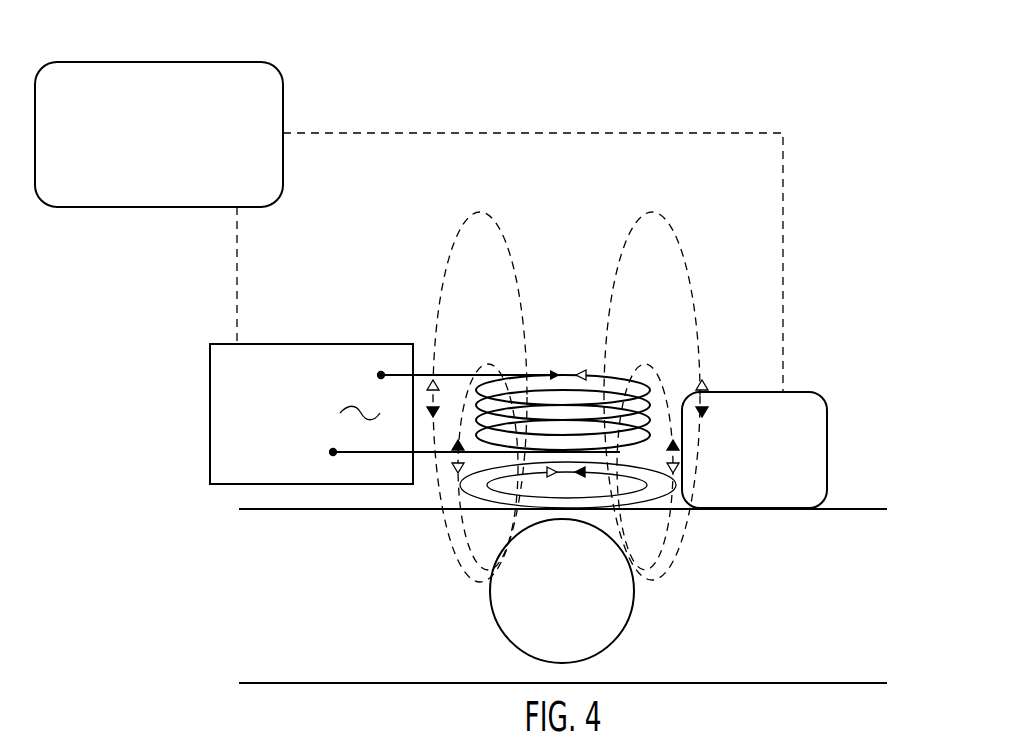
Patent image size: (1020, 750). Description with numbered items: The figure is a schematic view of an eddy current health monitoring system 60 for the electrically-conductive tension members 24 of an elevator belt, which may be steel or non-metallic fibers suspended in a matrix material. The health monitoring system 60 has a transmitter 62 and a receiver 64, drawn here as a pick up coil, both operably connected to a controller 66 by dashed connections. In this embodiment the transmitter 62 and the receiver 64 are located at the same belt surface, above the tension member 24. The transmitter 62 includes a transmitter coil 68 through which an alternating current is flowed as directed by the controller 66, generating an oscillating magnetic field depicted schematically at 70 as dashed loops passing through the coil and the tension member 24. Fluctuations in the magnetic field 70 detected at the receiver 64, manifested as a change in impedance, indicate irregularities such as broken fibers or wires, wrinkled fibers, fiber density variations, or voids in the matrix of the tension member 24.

The tension member 24 is at (562, 591).
The health monitoring system 60 is at (813, 96).
The transmitter 62 is at (272, 438).
The receiver 64 is at (822, 396).
The controller 66 is at (147, 174).
The transmitter coil 68 is at (568, 372).
The oscillating magnetic field 70 is at (700, 256).